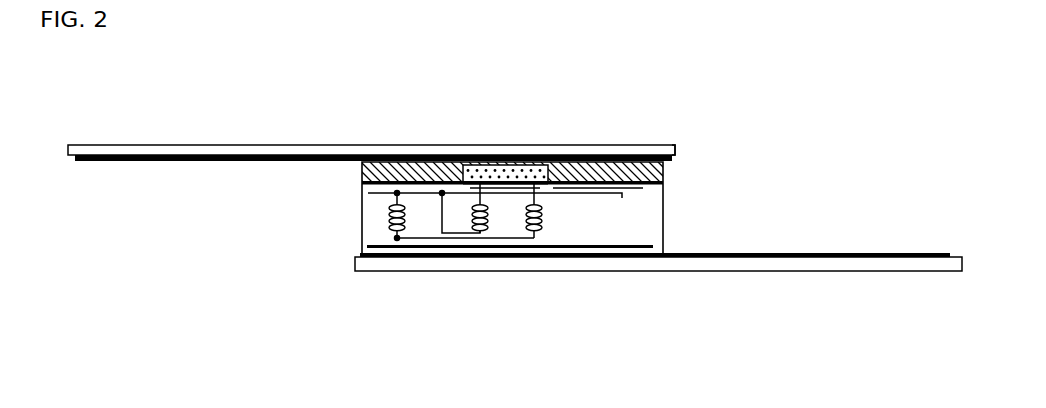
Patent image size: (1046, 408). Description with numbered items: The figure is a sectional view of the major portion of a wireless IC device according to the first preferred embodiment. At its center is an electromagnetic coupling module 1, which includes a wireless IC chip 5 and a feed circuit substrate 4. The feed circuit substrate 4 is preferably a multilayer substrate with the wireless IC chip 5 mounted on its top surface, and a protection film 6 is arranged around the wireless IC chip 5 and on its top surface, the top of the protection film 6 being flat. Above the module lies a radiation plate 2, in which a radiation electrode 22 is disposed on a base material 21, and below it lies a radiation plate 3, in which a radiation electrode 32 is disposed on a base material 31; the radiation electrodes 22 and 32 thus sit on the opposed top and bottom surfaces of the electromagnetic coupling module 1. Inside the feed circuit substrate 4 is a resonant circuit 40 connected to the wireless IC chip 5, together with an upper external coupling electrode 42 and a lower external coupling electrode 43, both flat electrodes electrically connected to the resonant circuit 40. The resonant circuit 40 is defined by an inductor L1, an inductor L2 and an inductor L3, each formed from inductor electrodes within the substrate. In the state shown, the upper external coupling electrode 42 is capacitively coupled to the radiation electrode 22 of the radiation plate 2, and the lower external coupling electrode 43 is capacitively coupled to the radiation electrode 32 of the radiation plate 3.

The electromagnetic coupling module 1 is at (700, 182).
The radiation plate 2 is at (218, 82).
The base material 21 is at (158, 145).
The radiation electrode 22 is at (175, 162).
The radiation plate 3 is at (885, 335).
The base material 31 is at (823, 271).
The radiation electrode 32 is at (842, 253).
The feed circuit substrate 4 is at (655, 227).
The resonant circuit 40 is at (504, 212).
The upper external coupling electrode 42 is at (379, 185).
The lower external coupling electrode 43 is at (380, 243).
The wireless IC chip 5 is at (520, 163).
The protection film 6 is at (674, 149).
The inductor L1 is at (408, 215).
The inductor L2 is at (493, 208).
The inductor L3 is at (548, 211).